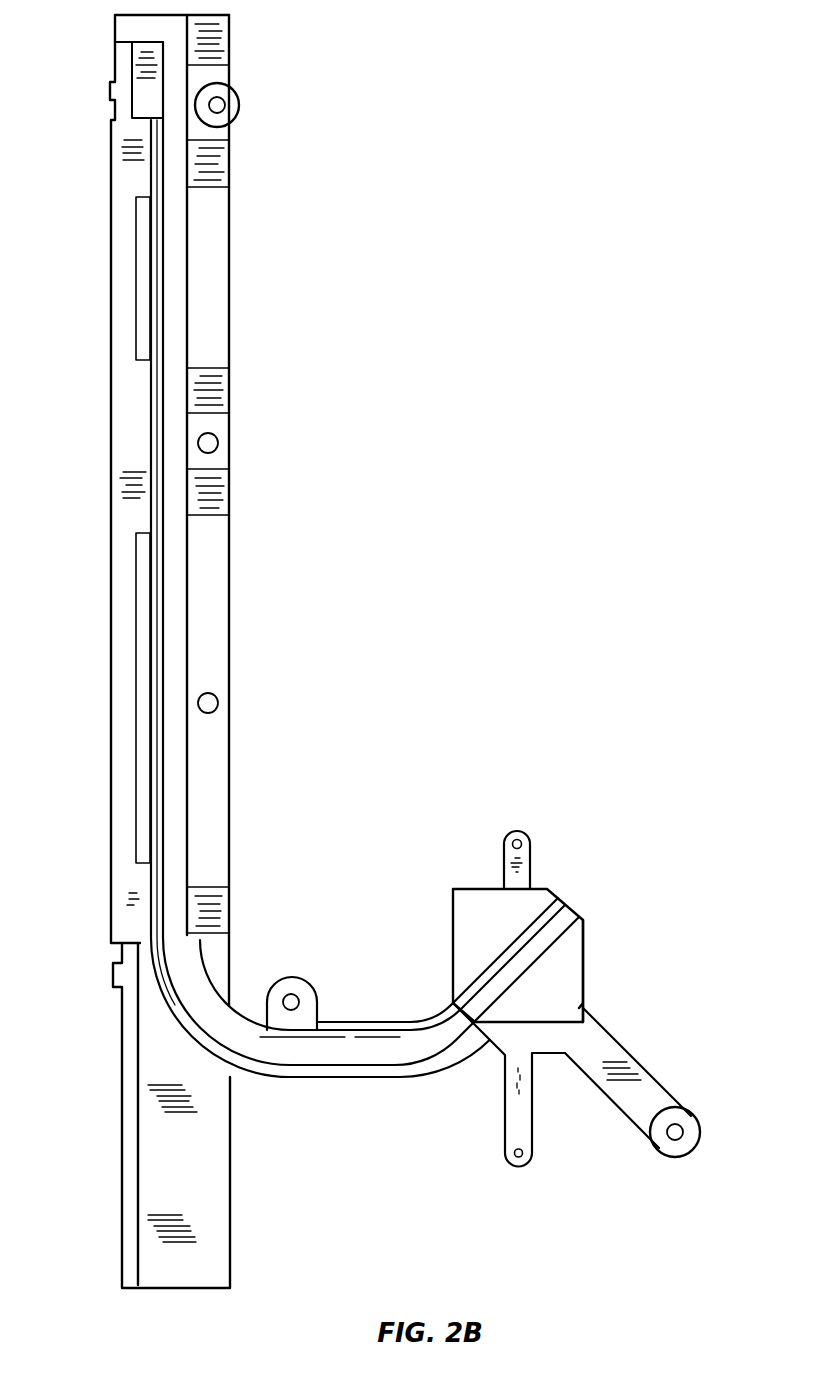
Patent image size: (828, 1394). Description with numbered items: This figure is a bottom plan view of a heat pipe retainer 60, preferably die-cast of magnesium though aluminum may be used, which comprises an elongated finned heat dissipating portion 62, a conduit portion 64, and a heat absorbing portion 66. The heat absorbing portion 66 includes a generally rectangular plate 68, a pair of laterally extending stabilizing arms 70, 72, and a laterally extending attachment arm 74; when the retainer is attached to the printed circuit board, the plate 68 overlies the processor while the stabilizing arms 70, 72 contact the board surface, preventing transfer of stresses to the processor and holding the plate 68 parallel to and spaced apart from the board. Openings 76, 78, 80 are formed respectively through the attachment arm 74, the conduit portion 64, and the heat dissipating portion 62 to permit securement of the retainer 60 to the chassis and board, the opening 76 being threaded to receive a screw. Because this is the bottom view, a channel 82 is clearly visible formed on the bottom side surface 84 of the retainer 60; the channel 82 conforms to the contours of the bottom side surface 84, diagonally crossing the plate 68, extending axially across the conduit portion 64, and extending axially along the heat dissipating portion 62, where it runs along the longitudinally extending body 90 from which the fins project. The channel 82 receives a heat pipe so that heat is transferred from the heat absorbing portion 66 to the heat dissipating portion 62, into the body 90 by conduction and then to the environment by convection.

The heat pipe retainer 60 is at (104, 696).
The heat dissipating portion 62 is at (240, 624).
The conduit portion 64 is at (369, 1090).
The heat absorbing portion 66 is at (443, 905).
The rectangular plate 68 is at (585, 975).
The stabilizing arm 70 is at (532, 862).
The stabilizing arm 72 is at (504, 1108).
The attachment arm 74 is at (648, 1066).
The opening 76 is at (677, 1130).
The opening 78 is at (294, 1000).
The opening 80 is at (220, 104).
The channel 82 is at (184, 244).
The bottom side surface 84 is at (139, 440).
The body 90 is at (233, 530).